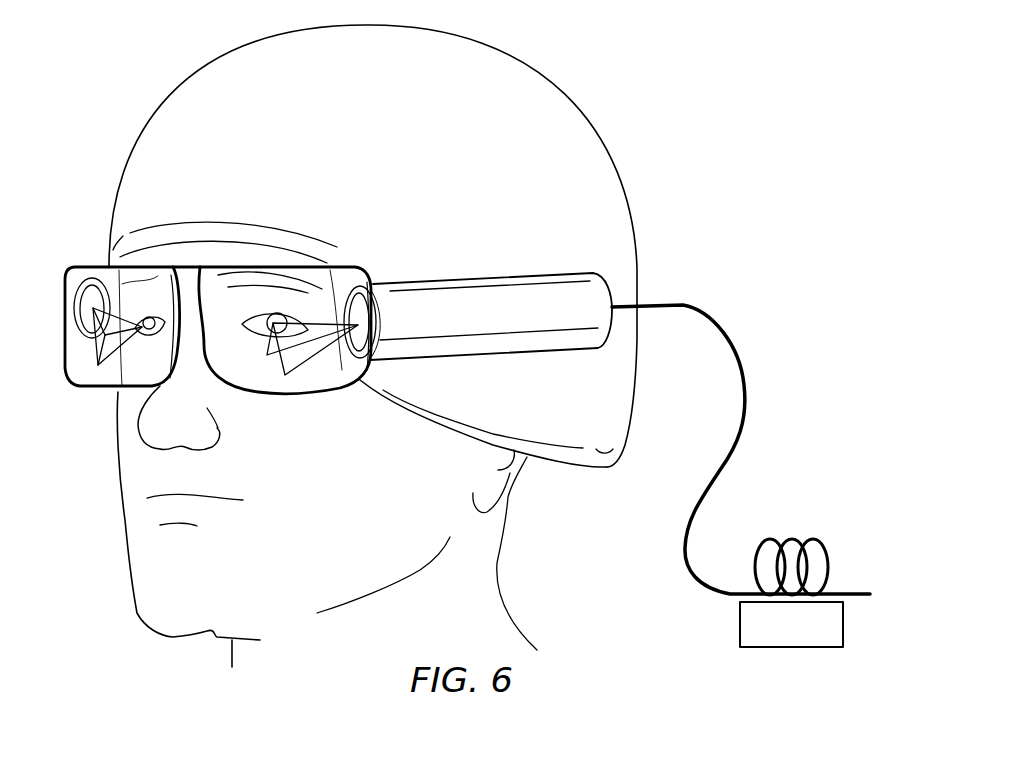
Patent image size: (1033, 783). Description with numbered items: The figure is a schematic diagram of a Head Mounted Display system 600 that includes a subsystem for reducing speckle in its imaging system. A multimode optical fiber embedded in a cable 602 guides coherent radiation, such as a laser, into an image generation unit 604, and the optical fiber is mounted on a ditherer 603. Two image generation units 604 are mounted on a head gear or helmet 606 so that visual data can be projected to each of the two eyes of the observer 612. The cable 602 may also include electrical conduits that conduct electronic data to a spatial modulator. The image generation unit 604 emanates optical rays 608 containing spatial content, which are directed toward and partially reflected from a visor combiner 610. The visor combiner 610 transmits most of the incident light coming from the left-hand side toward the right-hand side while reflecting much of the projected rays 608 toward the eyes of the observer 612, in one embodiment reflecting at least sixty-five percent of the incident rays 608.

The Head Mounted Display system 600 is at (700, 213).
The cable 602 is at (792, 540).
The ditherer 603 is at (797, 648).
The image generation unit 604 is at (508, 280).
The helmet 606 is at (617, 172).
The optical rays 608 is at (100, 357).
The visor combiner 610 is at (95, 413).
The observer 612 is at (128, 585).